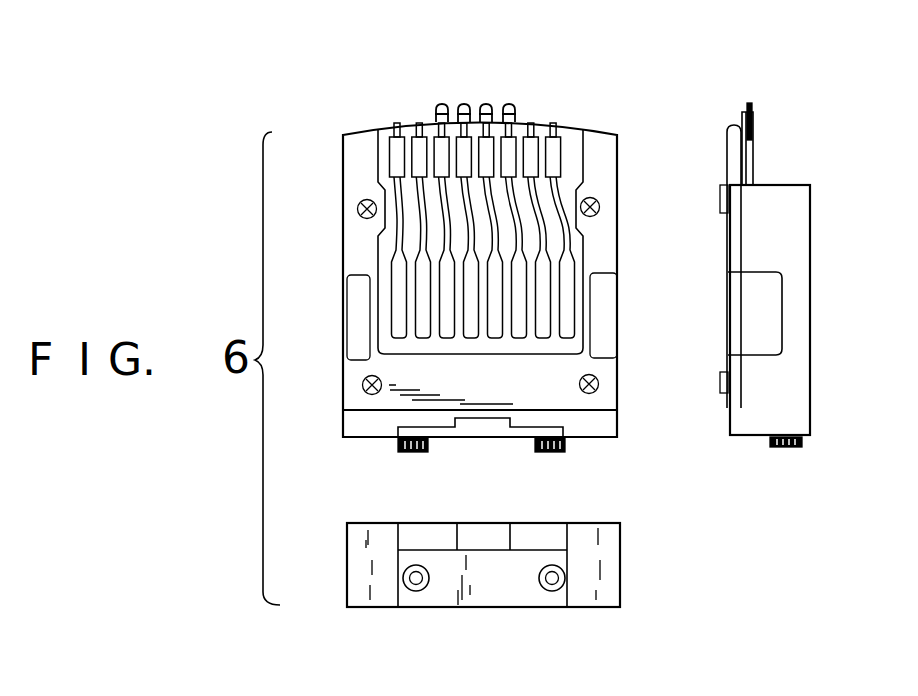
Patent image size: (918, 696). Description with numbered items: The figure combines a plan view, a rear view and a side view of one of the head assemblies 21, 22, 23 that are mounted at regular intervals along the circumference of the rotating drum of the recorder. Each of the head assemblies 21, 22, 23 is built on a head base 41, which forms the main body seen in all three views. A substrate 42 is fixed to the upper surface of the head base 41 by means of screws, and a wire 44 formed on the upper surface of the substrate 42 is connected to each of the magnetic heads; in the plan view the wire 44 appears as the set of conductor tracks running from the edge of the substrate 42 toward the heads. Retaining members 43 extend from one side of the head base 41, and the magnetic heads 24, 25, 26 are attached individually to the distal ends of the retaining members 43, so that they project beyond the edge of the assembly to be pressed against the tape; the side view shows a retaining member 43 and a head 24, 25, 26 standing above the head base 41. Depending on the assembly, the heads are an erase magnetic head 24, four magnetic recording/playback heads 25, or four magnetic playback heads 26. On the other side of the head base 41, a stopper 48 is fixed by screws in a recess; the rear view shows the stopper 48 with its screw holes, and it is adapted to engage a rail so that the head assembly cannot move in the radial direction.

The head assembly 21 is at (582, 342).
The head assembly 22 is at (582, 342).
The head assembly 23 is at (597, 106).
The erase magnetic head 24 is at (648, 86).
The magnetic recording/playback head 25 is at (648, 86).
The magnetic playback head 26 is at (467, 103).
The head base 41 is at (353, 430).
The substrate 42 is at (350, 257).
The retaining member 43 is at (753, 163).
The wire 44 is at (398, 328).
The stopper 48 is at (483, 438).